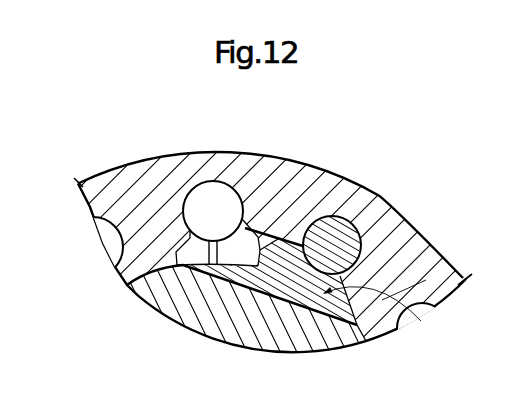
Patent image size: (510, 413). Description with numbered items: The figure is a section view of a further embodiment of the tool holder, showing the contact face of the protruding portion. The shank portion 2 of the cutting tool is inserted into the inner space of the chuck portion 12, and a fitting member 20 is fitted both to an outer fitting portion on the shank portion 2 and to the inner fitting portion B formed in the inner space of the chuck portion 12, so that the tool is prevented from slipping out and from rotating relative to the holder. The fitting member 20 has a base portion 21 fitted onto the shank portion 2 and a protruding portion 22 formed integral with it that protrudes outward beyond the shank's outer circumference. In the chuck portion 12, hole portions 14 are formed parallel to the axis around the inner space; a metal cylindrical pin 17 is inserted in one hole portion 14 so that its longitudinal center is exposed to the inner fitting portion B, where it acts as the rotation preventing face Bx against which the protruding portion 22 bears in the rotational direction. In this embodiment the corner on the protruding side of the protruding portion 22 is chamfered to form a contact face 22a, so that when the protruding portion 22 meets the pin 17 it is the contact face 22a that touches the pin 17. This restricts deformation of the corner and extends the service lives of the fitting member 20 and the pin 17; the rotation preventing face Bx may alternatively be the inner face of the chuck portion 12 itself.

The chuck portion 12 is at (123, 180).
The hole portion 14 is at (213, 187).
The pin 17 is at (339, 218).
The shank portion 2 is at (167, 307).
The base portion 21 is at (287, 268).
The protruding portion 22 is at (287, 245).
The contact face 22a is at (250, 229).
The fitting member 20 is at (418, 319).
The inner fitting portion B is at (187, 251).
The rotation preventing face Bx is at (283, 275).